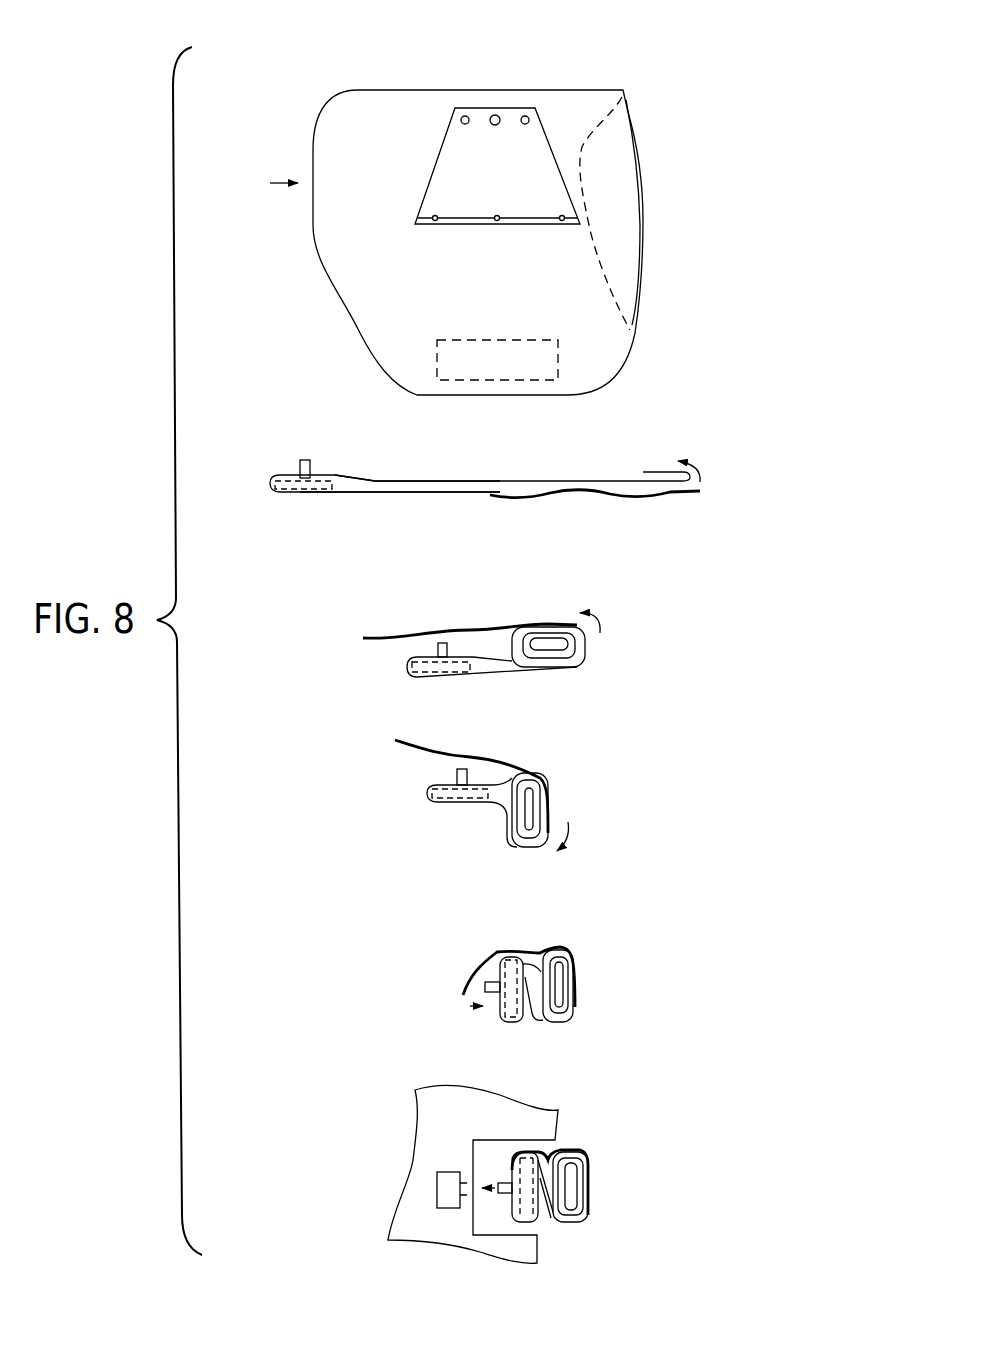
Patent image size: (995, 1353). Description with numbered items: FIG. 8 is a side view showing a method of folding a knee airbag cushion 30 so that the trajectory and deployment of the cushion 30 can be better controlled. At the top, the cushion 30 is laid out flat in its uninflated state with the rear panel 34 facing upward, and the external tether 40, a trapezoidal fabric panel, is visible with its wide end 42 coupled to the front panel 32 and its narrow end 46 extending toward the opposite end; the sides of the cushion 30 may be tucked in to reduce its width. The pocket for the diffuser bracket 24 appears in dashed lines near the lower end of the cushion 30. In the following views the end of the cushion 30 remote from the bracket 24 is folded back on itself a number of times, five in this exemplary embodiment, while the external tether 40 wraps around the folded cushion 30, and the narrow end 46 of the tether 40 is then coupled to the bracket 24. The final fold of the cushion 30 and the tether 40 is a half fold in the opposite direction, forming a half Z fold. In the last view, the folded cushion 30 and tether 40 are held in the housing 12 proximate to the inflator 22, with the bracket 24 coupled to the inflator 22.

The housing 12 is at (487, 1222).
The inflator 22 is at (448, 1182).
The diffuser bracket 24 is at (488, 372).
The airbag cushion 30 is at (635, 63).
The front panel 32 is at (370, 495).
The rear panel 34 is at (377, 480).
The external tether 40 is at (530, 140).
The wide end 42 is at (523, 228).
The narrow end 46 is at (505, 113).